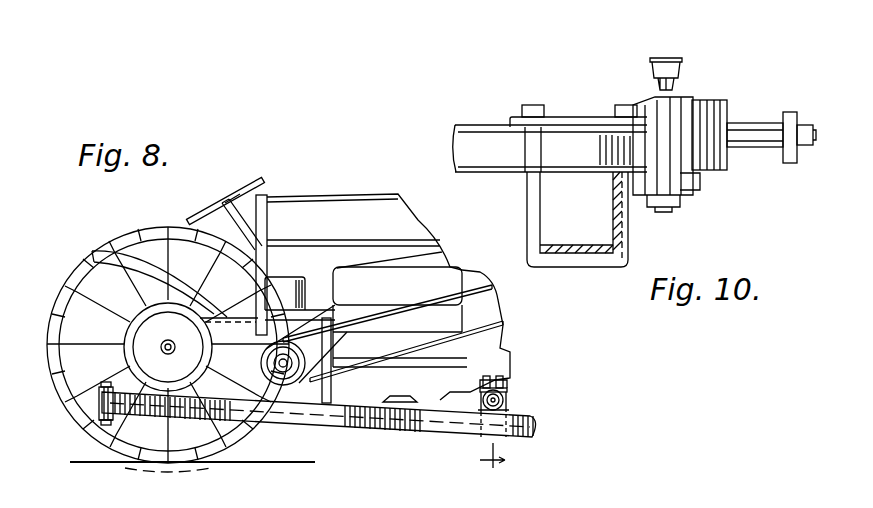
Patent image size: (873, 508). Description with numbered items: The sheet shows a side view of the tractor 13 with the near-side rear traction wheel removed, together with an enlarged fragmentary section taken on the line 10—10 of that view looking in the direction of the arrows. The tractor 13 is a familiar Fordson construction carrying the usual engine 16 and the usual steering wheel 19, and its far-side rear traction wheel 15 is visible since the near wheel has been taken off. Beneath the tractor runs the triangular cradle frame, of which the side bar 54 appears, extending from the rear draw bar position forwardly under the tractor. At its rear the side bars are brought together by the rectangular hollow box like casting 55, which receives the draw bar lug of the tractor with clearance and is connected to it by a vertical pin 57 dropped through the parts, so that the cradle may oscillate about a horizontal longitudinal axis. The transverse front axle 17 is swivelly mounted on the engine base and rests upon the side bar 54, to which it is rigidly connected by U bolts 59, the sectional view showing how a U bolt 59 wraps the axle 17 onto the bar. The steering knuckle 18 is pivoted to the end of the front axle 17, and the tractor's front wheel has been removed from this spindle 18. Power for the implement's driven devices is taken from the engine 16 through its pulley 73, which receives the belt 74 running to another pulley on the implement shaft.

In FIG. 8, the tractor 13 is at (383, 264).
In FIG. 8, the rear traction wheel 15 is at (133, 228).
In FIG. 8, the engine 16 is at (445, 278).
In FIG. 10, the front axle 17 is at (474, 148).
In FIG. 8, the steering knuckle 18 is at (480, 411).
In FIG. 10, the steering knuckle 18 is at (718, 116).
In FIG. 8, the steering wheel 19 is at (243, 184).
In FIG. 8, the section line 10— 10 is at (513, 380).
In FIG. 8, the side bar 54 is at (421, 426).
In FIG. 8, the box like casting 55 is at (100, 398).
In FIG. 8, the vertical pin 57 is at (99, 412).
In FIG. 8, the U bolt 59 is at (510, 407).
In FIG. 10, the U bolt 59 is at (633, 223).
In FIG. 8, the pulley 73 is at (287, 377).
In FIG. 8, the belt 74 is at (497, 291).